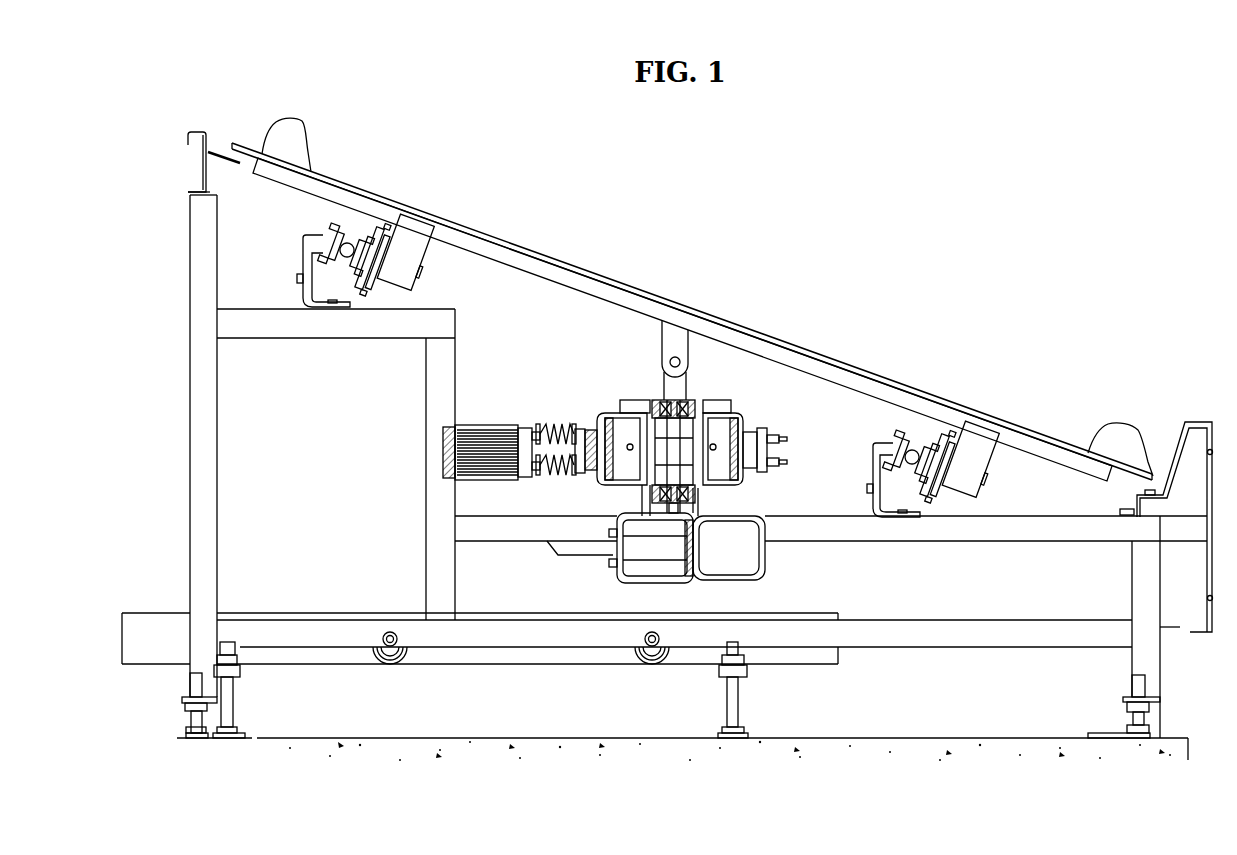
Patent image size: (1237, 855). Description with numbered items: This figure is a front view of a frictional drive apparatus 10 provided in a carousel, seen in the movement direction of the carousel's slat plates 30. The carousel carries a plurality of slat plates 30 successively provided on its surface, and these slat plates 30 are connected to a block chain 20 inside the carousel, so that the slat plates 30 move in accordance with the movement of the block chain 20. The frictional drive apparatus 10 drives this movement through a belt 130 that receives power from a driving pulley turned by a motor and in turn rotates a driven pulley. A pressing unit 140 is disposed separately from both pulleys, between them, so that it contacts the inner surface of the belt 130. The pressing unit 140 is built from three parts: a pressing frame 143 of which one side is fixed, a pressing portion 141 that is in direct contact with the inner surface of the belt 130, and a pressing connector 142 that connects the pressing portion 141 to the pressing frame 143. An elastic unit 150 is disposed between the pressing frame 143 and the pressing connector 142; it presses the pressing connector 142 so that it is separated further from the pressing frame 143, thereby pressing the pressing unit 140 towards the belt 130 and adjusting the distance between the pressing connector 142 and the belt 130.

The frictional drive apparatus 10 is at (593, 495).
The block chain 20 is at (717, 397).
The slat plates 30 is at (878, 369).
The belt 130 is at (667, 410).
The pressing unit 140 is at (700, 232).
The pressing portion 141 is at (627, 413).
The pressing connector 142 is at (600, 408).
The pressing frame 143 is at (534, 417).
The elastic unit 150 is at (556, 483).